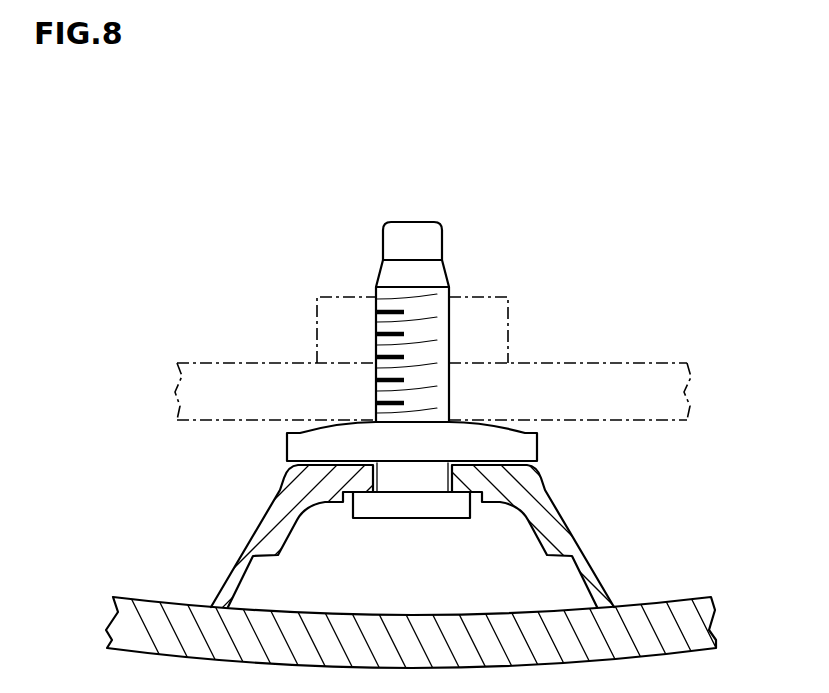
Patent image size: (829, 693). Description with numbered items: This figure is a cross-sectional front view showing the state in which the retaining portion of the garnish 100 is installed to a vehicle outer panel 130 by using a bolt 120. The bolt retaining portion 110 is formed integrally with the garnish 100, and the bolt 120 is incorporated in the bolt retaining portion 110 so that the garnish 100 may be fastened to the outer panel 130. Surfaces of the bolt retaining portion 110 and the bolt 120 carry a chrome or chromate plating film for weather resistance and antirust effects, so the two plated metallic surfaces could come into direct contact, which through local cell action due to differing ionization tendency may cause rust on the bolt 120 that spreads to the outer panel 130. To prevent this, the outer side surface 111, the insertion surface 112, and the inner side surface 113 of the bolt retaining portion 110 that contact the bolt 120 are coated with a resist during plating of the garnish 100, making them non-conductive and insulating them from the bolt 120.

The garnish 100 is at (658, 601).
The bolt retaining portion 110 is at (584, 561).
The outer side surface 111 is at (480, 462).
The insertion surface 112 is at (290, 457).
The inner side surface 113 is at (483, 502).
The bolt 120 is at (442, 224).
The outer panel 130 is at (614, 362).